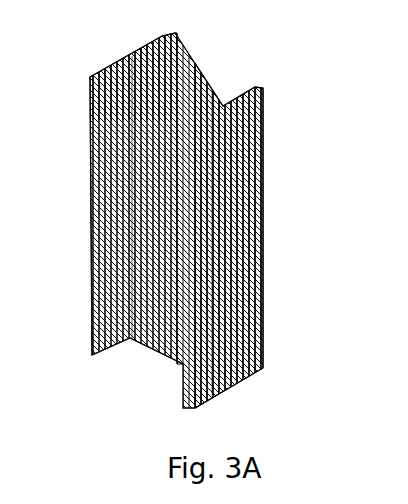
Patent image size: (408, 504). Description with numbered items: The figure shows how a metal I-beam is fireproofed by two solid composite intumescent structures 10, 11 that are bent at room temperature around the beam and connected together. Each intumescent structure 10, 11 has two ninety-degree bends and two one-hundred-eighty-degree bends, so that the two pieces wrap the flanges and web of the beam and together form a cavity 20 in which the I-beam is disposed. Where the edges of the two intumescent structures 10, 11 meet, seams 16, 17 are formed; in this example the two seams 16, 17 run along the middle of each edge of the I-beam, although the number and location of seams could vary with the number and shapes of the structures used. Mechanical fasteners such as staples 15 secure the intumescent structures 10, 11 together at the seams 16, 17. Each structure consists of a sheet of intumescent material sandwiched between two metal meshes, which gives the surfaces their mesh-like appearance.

The solid composite intumescent structure 10 is at (98, 153).
The solid composite intumescent structure 11 is at (263, 172).
The staples 15 is at (228, 247).
The seam 16 is at (227, 125).
The seam 17 is at (132, 56).
The cavity 20 is at (165, 76).